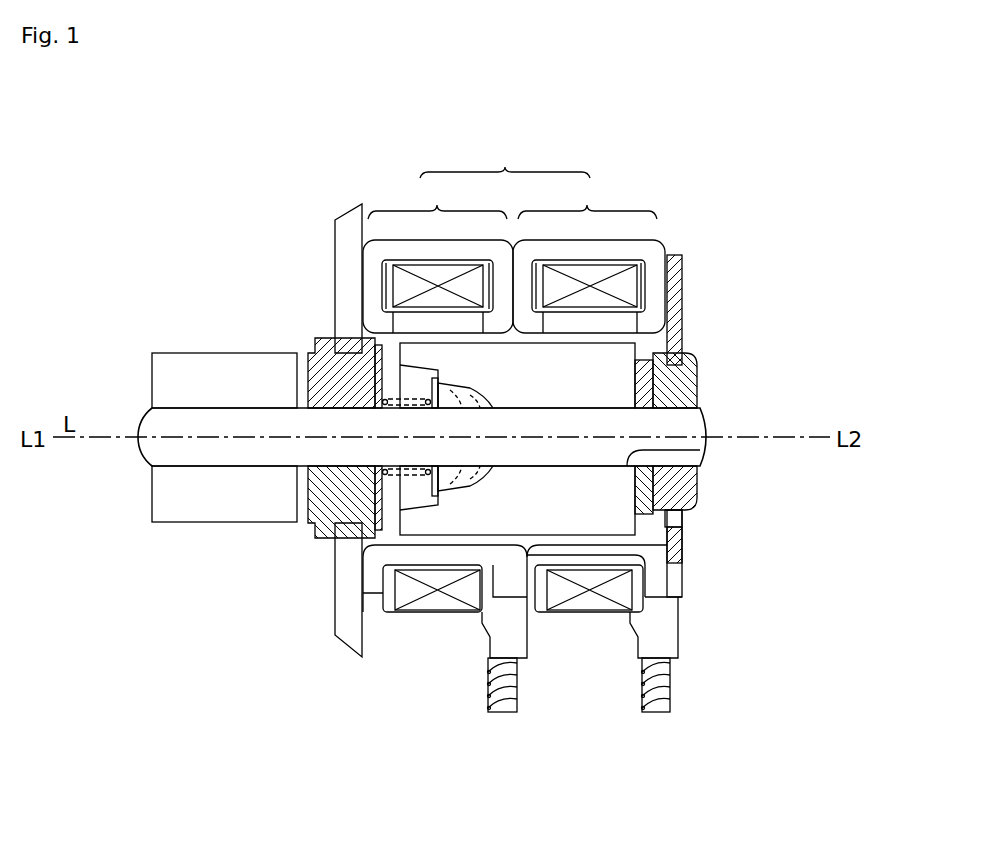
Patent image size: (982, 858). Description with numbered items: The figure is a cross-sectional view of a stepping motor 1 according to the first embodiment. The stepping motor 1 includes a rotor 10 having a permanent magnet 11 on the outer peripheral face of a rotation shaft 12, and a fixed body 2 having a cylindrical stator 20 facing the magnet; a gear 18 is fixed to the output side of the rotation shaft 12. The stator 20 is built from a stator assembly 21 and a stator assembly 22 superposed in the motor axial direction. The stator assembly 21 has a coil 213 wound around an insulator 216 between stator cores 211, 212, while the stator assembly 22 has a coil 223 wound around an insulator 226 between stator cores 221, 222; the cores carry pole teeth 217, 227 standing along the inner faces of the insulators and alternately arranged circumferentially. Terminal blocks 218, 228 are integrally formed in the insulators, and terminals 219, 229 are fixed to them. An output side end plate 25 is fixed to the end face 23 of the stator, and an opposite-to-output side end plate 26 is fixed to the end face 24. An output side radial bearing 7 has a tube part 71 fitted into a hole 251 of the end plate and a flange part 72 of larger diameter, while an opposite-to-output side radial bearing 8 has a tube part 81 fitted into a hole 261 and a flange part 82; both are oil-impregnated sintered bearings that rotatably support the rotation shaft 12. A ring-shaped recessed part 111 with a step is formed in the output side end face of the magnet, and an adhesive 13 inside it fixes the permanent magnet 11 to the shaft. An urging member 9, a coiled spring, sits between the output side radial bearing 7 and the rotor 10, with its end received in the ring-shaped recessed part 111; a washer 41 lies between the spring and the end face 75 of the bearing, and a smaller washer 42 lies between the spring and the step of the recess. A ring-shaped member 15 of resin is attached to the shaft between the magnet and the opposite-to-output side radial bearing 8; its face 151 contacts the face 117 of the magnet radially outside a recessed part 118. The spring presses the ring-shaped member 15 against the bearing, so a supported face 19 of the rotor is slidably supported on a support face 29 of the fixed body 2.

The stepping motor 1 is at (335, 160).
The fixed body 2 is at (337, 208).
The output side radial bearing 7 is at (320, 398).
The opposite-to-output side radial bearing 8 is at (693, 377).
The urging member 9 is at (412, 402).
The rotor 10 is at (232, 683).
The permanent magnet 11 is at (427, 522).
The rotation shaft 12 is at (243, 453).
The adhesive 13 is at (477, 477).
The ring-shaped member 15 is at (633, 495).
The gear 18 is at (163, 493).
The supported face 19 is at (678, 393).
The stator 20 is at (505, 158).
The stator assembly 21 is at (438, 256).
The stator assembly 22 is at (589, 256).
The end face 23 is at (366, 280).
The end face 24 is at (677, 278).
The output side end plate 25 is at (345, 635).
The opposite-to-output side end plate 26 is at (678, 565).
The support face 29 is at (672, 380).
The washer 41 is at (378, 520).
The washer 42 is at (438, 382).
The tube part 71 is at (313, 375).
The flange part 72 is at (310, 347).
The end face 75 is at (370, 498).
The tube part 81 is at (692, 473).
The flange part 82 is at (677, 530).
The ring-shaped recessed part 111 is at (428, 507).
The face 117 is at (606, 510).
The recessed part 118 is at (700, 462).
The face 151 is at (635, 480).
The stator core 211 is at (420, 247).
The stator core 212 is at (412, 268).
The coil 213 is at (410, 285).
The insulator 216 is at (392, 297).
The pole teeth 217 is at (467, 323).
The terminal block 218 is at (493, 630).
The terminal 219 is at (510, 707).
The stator core 221 is at (613, 247).
The stator core 222 is at (623, 283).
The coil 223 is at (638, 295).
The insulator 226 is at (653, 290).
The pole teeth 227 is at (597, 323).
The terminal block 228 is at (643, 647).
The terminal 229 is at (658, 707).
The hole 251 is at (337, 337).
The hole 261 is at (678, 520).